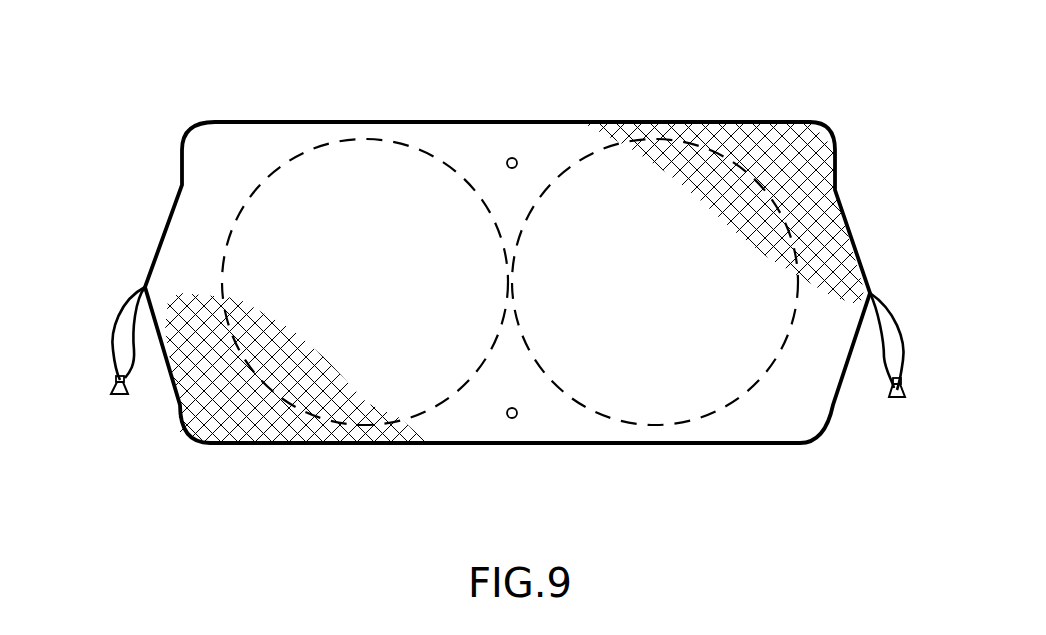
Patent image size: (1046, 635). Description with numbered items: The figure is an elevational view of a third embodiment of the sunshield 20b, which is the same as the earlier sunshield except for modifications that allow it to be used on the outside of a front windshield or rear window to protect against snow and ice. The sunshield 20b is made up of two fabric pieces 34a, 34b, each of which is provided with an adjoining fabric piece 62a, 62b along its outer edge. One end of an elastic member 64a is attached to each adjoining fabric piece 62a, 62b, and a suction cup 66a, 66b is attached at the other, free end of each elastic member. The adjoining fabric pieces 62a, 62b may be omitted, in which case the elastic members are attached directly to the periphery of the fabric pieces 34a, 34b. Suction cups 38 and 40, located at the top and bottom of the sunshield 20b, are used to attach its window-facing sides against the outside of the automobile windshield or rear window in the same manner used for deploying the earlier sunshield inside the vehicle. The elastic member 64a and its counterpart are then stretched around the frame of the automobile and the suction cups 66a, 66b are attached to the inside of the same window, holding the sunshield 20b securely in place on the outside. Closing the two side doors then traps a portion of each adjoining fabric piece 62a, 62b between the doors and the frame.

The sunshield 20b is at (132, 103).
The fabric piece 34a is at (655, 282).
The fabric piece 34b is at (365, 282).
The suction cup 38 is at (512, 157).
The suction cup 40 is at (512, 418).
The adjoining fabric piece 62a is at (848, 262).
The adjoining fabric piece 62b is at (175, 346).
The elastic member 64a is at (115, 327).
The suction cup 66a is at (906, 393).
The suction cup 66b is at (112, 412).